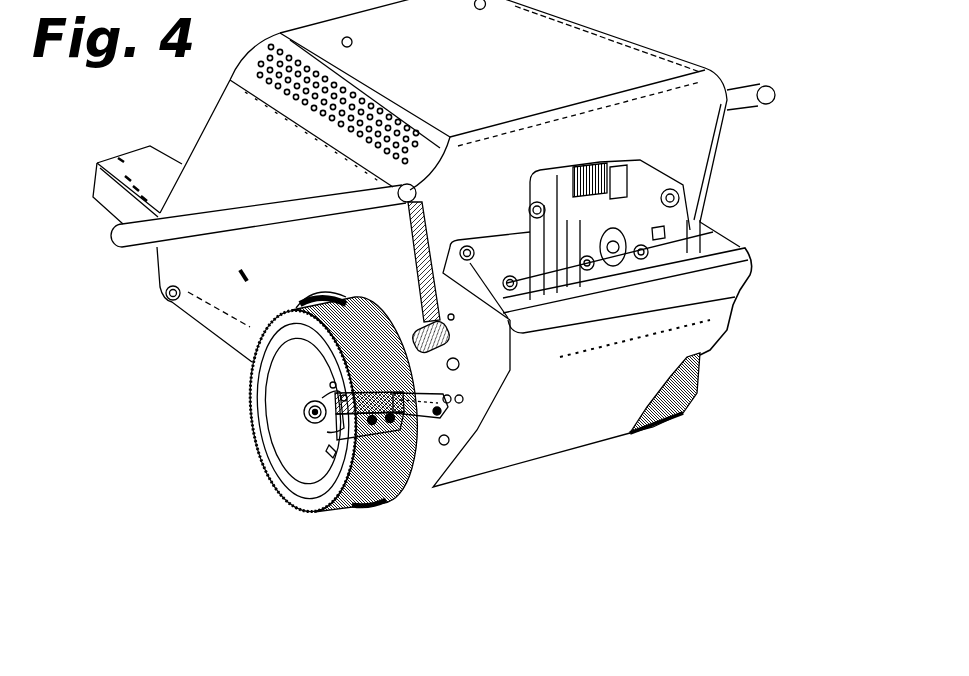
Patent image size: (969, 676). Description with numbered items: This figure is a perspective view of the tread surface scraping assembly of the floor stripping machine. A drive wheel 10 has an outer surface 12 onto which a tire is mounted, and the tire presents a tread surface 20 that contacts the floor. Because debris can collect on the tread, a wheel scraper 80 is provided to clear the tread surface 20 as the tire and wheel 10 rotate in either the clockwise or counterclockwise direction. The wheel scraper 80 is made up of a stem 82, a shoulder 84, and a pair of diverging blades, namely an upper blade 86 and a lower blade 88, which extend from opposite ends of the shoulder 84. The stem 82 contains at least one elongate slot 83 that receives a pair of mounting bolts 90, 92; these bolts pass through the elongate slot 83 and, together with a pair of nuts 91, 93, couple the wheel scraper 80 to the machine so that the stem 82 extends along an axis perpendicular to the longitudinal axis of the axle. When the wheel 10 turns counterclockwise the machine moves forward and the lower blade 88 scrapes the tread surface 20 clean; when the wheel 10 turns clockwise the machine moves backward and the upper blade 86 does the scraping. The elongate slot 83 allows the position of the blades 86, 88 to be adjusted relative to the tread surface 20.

The drive wheel 10 is at (245, 390).
The outer surface 12 is at (307, 367).
The tread surface 20 is at (370, 507).
The wheel scraper 80 is at (328, 431).
The stem 82 is at (439, 412).
The elongate slot 83 is at (446, 407).
The shoulder 84 is at (352, 425).
The upper blade 86 is at (354, 394).
The lower blade 88 is at (332, 453).
The mounting bolt 90 is at (463, 401).
The nut 91 is at (373, 422).
The mounting bolt 92 is at (449, 396).
The nut 93 is at (389, 421).